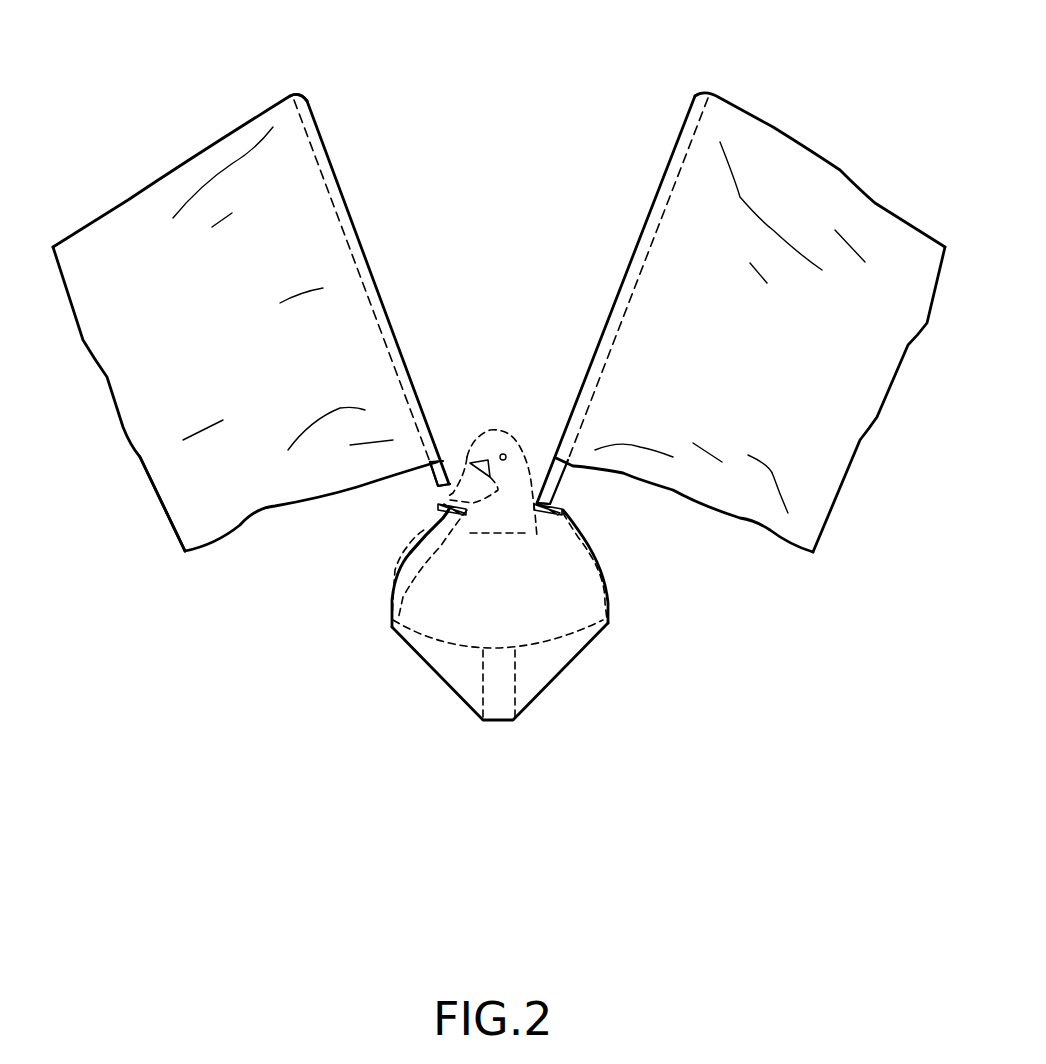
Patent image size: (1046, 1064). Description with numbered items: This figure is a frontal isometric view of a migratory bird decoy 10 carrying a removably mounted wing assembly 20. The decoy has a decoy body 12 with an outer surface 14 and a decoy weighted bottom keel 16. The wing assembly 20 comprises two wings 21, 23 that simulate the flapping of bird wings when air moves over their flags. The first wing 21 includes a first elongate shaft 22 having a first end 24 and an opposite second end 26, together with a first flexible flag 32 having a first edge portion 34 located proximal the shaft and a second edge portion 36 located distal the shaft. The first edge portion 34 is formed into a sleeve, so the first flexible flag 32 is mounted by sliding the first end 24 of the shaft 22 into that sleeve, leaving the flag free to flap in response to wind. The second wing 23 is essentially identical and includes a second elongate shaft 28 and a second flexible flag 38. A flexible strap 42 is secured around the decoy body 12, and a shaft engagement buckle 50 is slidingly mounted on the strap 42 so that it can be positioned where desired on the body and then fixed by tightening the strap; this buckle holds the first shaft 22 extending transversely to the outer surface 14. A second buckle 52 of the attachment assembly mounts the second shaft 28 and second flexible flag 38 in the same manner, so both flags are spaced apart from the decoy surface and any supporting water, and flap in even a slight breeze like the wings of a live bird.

The migratory bird decoy 10 is at (345, 710).
The decoy body 12 is at (618, 609).
The outer surface 14 is at (587, 562).
The decoy weighted bottom keel 16 is at (482, 687).
The wing assembly 20 is at (547, 297).
The first wing 21 is at (393, 243).
The first elongate shaft 22 is at (422, 480).
The second wing 23 is at (677, 140).
The first end 24 is at (445, 493).
The second end 26 is at (297, 92).
The second elongate shaft 28 is at (533, 490).
The first flexible flag 32 is at (221, 389).
The first edge portion 34 is at (333, 162).
The second edge portion 36 is at (160, 495).
The second flexible flag 38 is at (844, 372).
The flexible strap 42 is at (564, 676).
The shaft engagement buckle 50 is at (410, 553).
The second buckle 52 is at (562, 505).